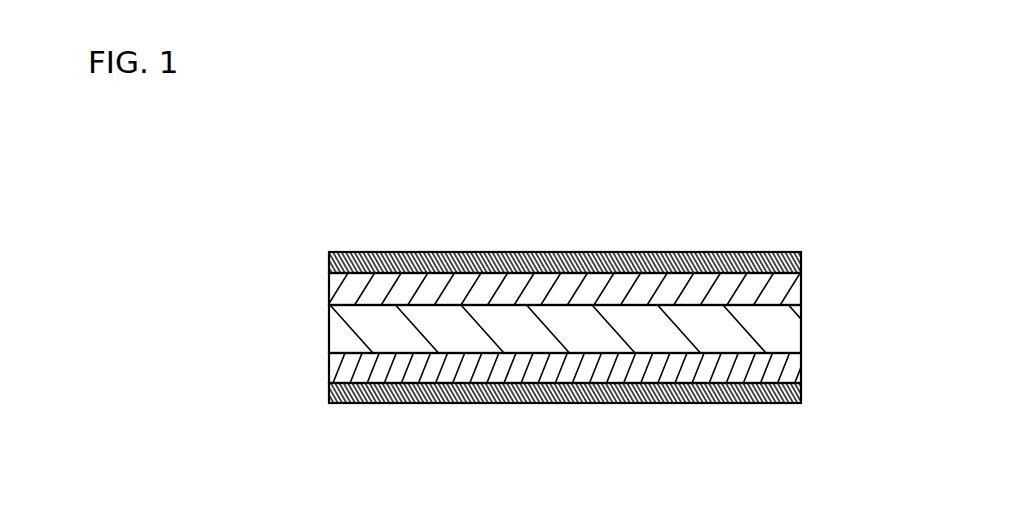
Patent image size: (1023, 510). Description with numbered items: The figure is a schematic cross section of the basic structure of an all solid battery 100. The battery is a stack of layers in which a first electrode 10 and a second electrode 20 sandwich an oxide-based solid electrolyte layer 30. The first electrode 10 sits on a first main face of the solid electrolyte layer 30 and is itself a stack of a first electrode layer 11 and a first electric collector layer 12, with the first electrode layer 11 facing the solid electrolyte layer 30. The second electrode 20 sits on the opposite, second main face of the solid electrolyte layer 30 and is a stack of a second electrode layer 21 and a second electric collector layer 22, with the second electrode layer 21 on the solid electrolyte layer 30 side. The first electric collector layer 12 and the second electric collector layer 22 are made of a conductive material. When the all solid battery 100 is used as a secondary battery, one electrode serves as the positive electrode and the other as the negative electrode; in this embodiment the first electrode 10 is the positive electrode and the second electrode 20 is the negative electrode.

The all solid battery 100 is at (984, 164).
The second electrode 20 is at (905, 231).
The second electric collector layer 22 is at (801, 256).
The second electrode layer 21 is at (801, 291).
The solid electrolyte layer 30 is at (345, 342).
The first electrode 10 is at (905, 345).
The first electrode layer 11 is at (792, 365).
The first electric collector layer 12 is at (801, 392).